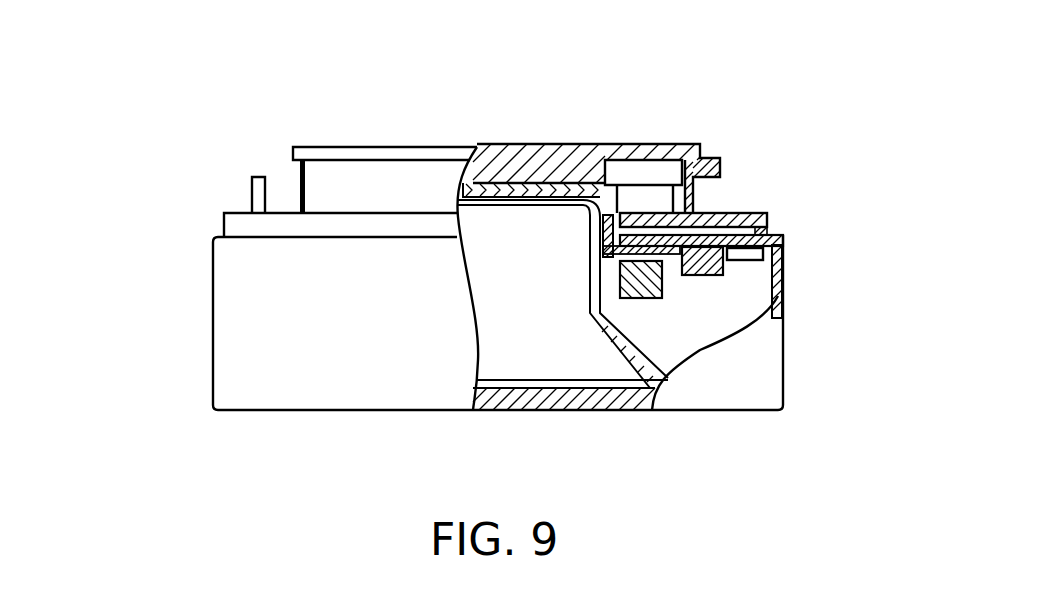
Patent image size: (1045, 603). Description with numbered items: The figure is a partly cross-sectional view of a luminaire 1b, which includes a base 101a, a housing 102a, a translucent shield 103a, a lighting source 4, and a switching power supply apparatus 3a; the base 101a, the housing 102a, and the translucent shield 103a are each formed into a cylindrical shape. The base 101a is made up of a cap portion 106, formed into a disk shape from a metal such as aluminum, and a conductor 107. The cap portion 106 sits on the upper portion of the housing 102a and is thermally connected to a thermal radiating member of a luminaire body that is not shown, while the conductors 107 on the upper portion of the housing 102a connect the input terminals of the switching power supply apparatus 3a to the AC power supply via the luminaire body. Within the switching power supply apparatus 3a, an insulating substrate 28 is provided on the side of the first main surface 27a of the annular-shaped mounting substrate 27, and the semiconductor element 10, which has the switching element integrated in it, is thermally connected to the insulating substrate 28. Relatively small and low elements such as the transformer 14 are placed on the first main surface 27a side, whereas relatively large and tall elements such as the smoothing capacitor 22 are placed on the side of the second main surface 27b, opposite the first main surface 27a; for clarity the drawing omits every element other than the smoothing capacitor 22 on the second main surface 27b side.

The luminaire 1b is at (788, 85).
The base 101a is at (137, 75).
The cap portion 106 is at (315, 150).
The conductor 107 is at (262, 178).
The lighting source 4 is at (522, 203).
The first main surface 27a is at (609, 255).
The second main surface 27b is at (617, 257).
The housing 102a is at (773, 222).
The insulating substrate 28 is at (745, 240).
The semiconductor element 10 is at (713, 263).
The mounting substrate 27 is at (668, 258).
The transformer 14 is at (645, 250).
The smoothing capacitor 22 is at (655, 262).
The switching power supply apparatus 3a is at (863, 227).
The translucent shield 103a is at (600, 412).